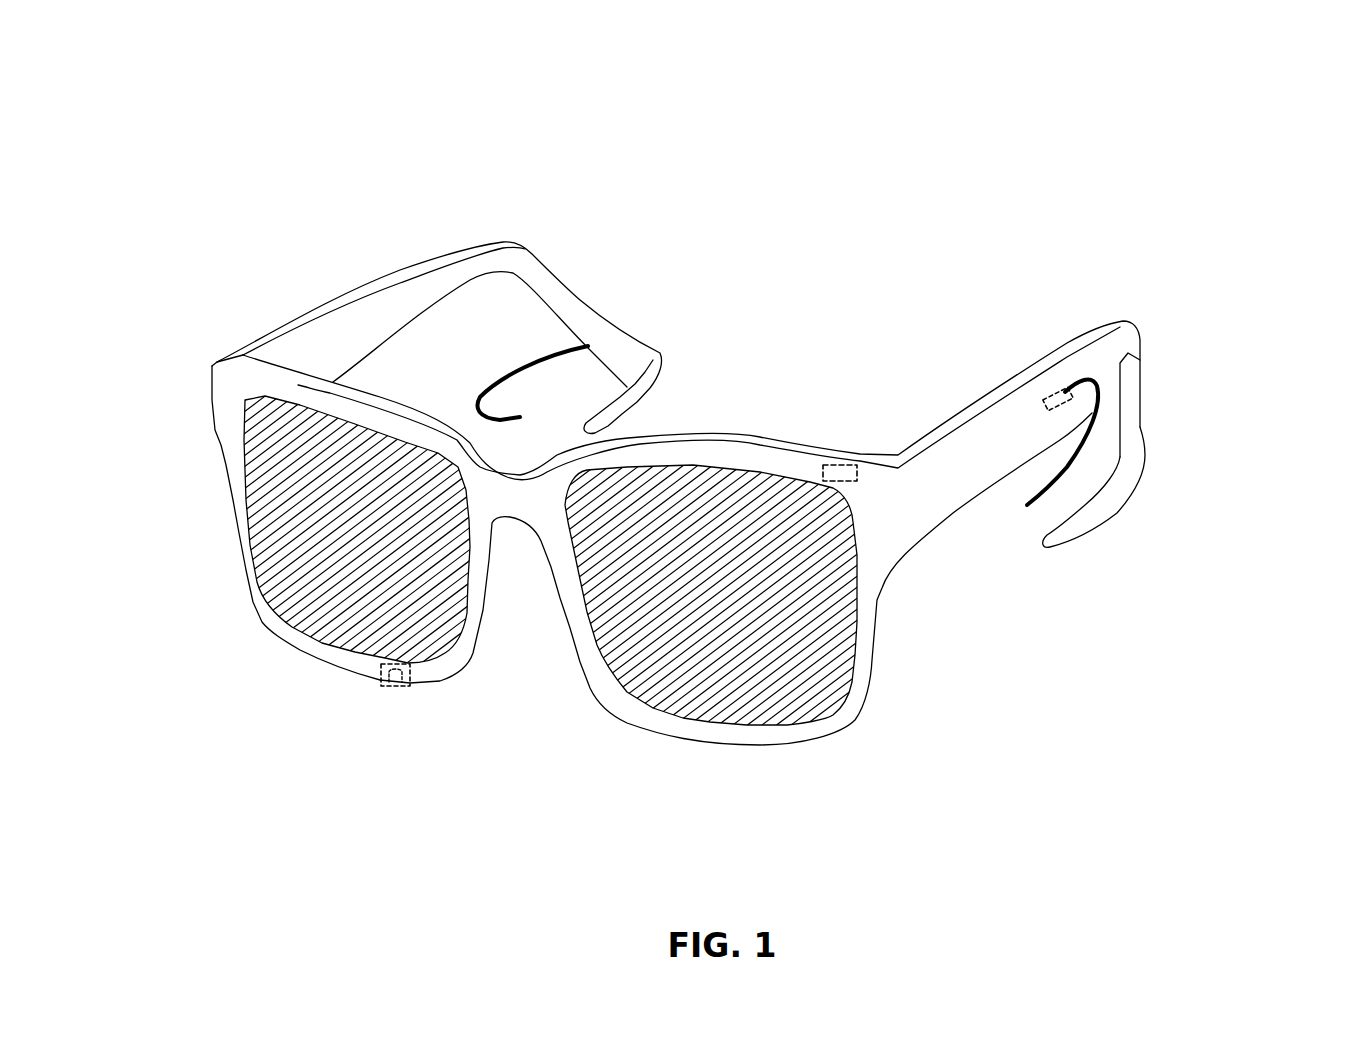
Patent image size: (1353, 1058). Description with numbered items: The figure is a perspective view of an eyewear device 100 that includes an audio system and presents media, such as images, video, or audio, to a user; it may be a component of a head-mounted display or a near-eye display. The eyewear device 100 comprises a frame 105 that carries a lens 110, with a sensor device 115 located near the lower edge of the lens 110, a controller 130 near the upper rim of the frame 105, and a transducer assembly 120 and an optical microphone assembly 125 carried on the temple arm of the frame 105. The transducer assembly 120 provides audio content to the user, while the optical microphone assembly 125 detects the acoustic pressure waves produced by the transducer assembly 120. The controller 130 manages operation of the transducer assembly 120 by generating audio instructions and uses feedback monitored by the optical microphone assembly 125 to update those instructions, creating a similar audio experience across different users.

The eyewear device 100 is at (124, 95).
The frame 105 is at (930, 447).
The lens 110 is at (293, 530).
The sensor device 115 is at (393, 687).
The transducer assembly 120 is at (1103, 523).
The optical microphone assembly 125 is at (1080, 383).
The controller 130 is at (840, 470).